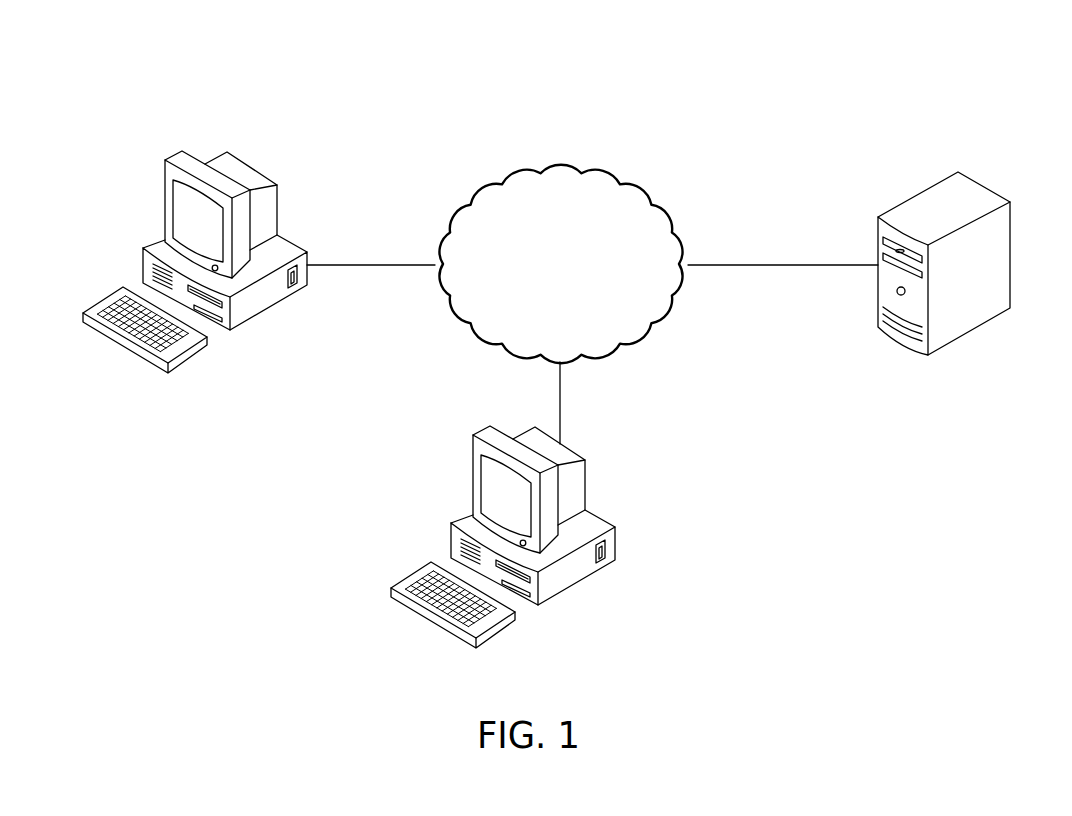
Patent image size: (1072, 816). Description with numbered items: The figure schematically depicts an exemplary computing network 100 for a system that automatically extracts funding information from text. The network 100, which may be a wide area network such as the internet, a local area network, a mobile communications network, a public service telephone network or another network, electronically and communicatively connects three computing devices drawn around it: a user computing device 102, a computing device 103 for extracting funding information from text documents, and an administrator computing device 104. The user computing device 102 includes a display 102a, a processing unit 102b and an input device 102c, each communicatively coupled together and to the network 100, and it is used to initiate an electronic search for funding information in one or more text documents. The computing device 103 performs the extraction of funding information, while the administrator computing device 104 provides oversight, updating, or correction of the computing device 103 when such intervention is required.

The network 100 is at (647, 190).
The user computing device 102 is at (211, 217).
The display 102a is at (165, 173).
The processing unit 102b is at (257, 310).
The input device 102c is at (178, 360).
The computing device for extracting funding information from text documents 103 is at (990, 168).
The administrator computing device 104 is at (608, 475).